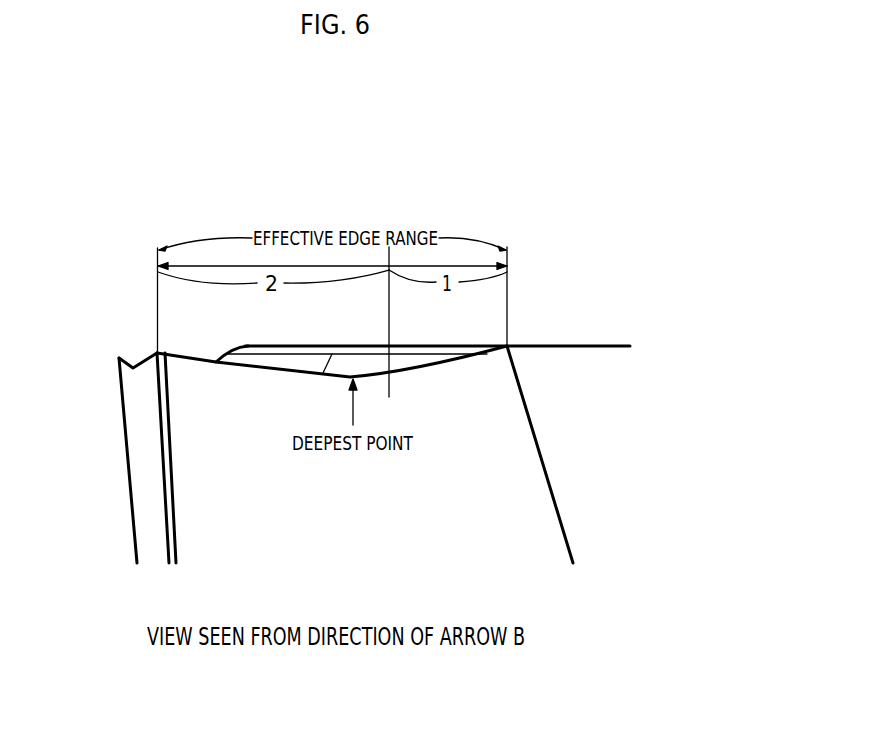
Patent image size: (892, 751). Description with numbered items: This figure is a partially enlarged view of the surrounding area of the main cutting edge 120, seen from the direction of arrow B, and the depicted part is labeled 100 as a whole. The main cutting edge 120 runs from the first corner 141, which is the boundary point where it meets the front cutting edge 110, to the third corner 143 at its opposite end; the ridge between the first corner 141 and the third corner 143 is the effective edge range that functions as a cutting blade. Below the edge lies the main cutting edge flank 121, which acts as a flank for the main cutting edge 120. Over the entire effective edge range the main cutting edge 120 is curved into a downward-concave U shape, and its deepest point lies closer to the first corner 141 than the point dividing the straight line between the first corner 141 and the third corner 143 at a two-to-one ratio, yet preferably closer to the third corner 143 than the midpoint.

The cutting tool 100 is at (72, 188).
The front cutting edge 110 is at (133, 368).
The main cutting edge 120 is at (412, 368).
The main cutting edge flank 121 is at (277, 503).
The first corner 141 is at (157, 350).
The third corner 143 is at (507, 345).